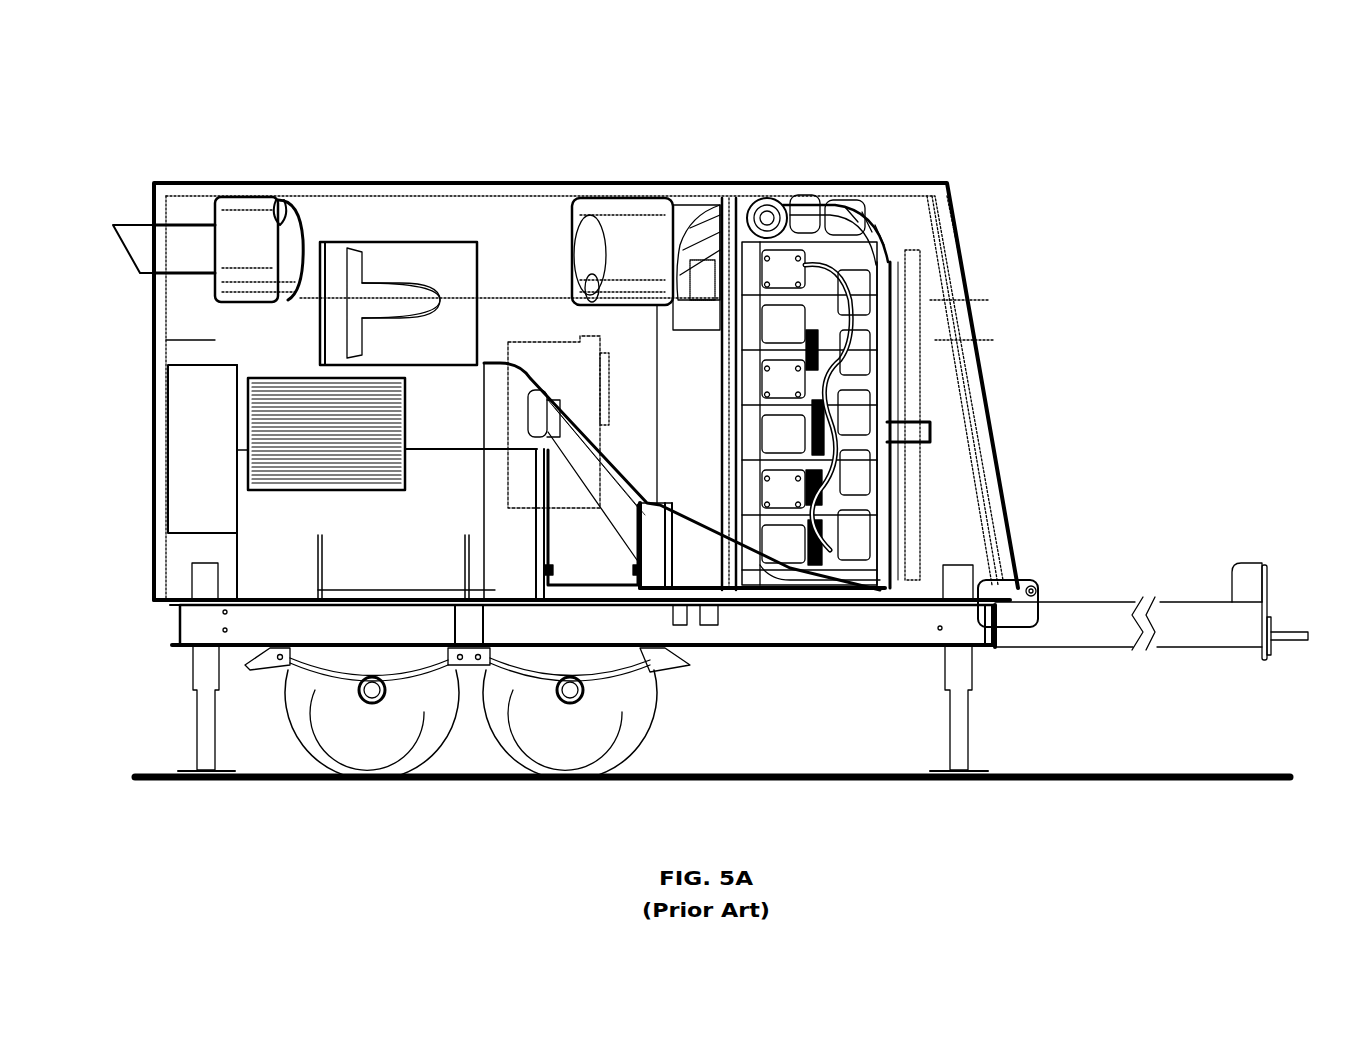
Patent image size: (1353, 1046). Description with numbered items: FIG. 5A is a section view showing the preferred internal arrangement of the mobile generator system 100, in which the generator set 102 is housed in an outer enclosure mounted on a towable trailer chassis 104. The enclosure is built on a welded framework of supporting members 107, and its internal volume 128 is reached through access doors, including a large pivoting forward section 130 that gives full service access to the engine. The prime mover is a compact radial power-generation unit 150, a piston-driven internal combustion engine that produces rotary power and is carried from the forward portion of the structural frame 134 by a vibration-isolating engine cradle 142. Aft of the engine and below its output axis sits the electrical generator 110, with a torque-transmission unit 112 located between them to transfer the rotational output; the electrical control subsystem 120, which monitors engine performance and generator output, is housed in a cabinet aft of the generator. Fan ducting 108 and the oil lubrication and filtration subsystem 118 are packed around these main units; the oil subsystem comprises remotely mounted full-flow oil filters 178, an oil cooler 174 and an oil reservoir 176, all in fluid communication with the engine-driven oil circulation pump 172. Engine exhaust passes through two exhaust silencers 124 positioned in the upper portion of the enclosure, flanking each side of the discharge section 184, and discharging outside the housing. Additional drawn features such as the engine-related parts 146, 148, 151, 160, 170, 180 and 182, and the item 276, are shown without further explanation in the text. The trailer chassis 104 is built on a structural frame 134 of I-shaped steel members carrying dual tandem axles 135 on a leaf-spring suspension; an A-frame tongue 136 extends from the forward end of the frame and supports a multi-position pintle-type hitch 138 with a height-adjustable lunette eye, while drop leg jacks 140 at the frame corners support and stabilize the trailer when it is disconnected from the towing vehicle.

The mobile power generation system 100 is at (1195, 183).
The generator set 102 is at (1085, 210).
The towable trailer chassis 104 is at (768, 718).
The supporting members 107 is at (975, 318).
The fan ducting 108 is at (513, 237).
The electrical generator 110 is at (272, 548).
The torque-transmission unit 112 is at (603, 575).
The oil lubrication and filtration subsystem 118 is at (238, 480).
The electrical control subsystem 120 is at (168, 352).
The exhaust silencer 124 is at (135, 225).
The internal volume 128 is at (210, 338).
The pivoting forward section 130 is at (992, 452).
The structural frame 134 is at (875, 640).
The dual tandem axles 135 is at (360, 715).
The tongue 136 is at (1185, 642).
The pintle-type hitch 138 is at (1275, 558).
The drop leg jack 140 is at (192, 709).
The engine cradle 142 is at (887, 573).
The muffler 146 is at (370, 257).
The engine 148 is at (742, 412).
The radial power-generation unit 150 is at (902, 282).
The rear wall 151 is at (858, 238).
The turbocharger 160 is at (790, 188).
The exhaust pipe 170 is at (405, 287).
The oil circulation pump 172 is at (915, 422).
The oil cooler 174 is at (246, 410).
The oil reservoir 176 is at (508, 498).
The full-flow oil filters 178 is at (722, 630).
The fan 180 is at (697, 210).
The engine compartment 182 is at (885, 227).
The discharge section 184 is at (325, 243).
The rear door 276 is at (887, 365).